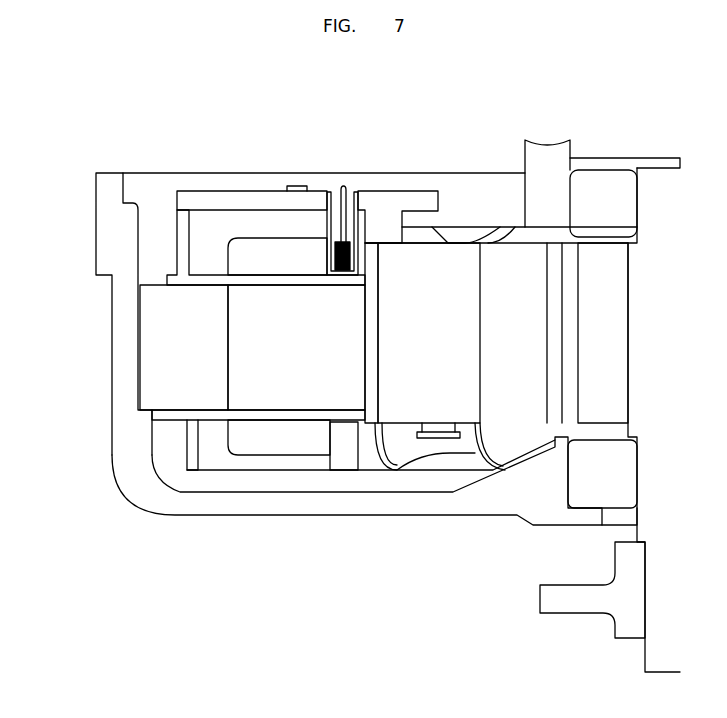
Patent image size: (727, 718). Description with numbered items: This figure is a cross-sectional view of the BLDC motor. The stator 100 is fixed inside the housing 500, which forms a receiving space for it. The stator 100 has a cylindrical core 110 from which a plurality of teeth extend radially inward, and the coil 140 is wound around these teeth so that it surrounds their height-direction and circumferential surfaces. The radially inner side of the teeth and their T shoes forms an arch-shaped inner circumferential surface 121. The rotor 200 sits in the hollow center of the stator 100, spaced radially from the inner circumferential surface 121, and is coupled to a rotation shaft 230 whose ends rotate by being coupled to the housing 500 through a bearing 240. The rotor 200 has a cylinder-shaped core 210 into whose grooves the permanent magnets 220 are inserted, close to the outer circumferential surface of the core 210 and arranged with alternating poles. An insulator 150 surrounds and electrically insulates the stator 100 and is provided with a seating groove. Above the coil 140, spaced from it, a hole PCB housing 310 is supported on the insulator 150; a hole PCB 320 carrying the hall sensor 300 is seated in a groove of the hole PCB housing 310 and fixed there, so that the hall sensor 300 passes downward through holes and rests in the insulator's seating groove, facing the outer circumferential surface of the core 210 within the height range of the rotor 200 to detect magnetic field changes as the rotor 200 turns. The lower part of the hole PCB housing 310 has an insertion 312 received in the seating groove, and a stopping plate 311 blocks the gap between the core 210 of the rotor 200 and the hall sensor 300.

The stator 100 is at (138, 391).
The core 110 is at (158, 327).
The inner circumferential surface 121 is at (350, 470).
The coil 140 is at (234, 240).
The insulator 150 is at (180, 218).
The rotor 200 is at (662, 156).
The core 210 is at (535, 227).
The permanent magnet 220 is at (440, 265).
The rotation shaft 230 is at (643, 668).
The bearing 240 is at (595, 170).
The hall sensor 300 is at (343, 240).
The hole PCB housing 310 is at (178, 200).
The stopping plate 311 is at (372, 243).
The insertion 312 is at (325, 240).
The hole PCB 320 is at (200, 191).
The housing 500 is at (407, 505).